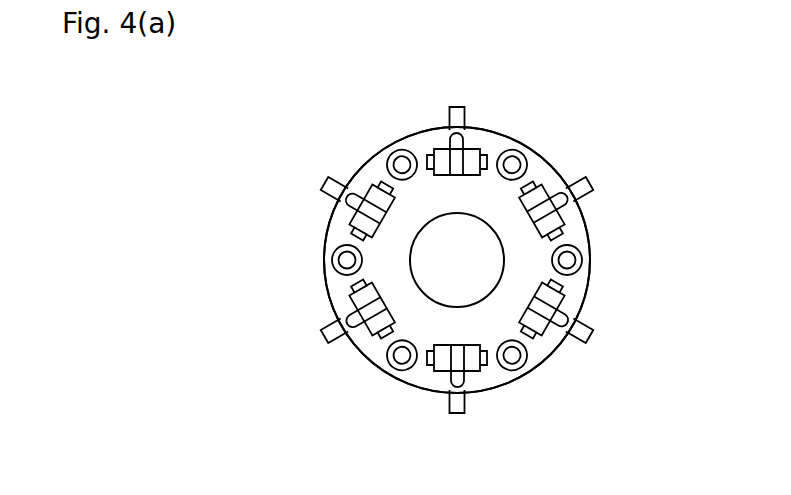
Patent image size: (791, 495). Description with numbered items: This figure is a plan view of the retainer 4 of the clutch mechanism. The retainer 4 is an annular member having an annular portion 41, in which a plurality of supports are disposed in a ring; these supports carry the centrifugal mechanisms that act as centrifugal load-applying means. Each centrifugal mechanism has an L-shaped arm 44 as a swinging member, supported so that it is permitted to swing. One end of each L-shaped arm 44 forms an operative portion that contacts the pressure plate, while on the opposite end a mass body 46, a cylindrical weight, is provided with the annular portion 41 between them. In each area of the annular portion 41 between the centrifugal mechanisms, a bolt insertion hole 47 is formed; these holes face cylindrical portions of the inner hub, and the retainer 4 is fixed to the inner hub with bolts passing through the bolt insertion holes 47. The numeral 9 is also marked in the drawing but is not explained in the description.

The retainer 4 is at (602, 122).
The annular portion 41 is at (542, 348).
The L-shaped arm 44 is at (583, 340).
The mass body 46 is at (469, 367).
The bolt insertion hole 47 is at (568, 263).
The electronic component 9 is at (568, 307).